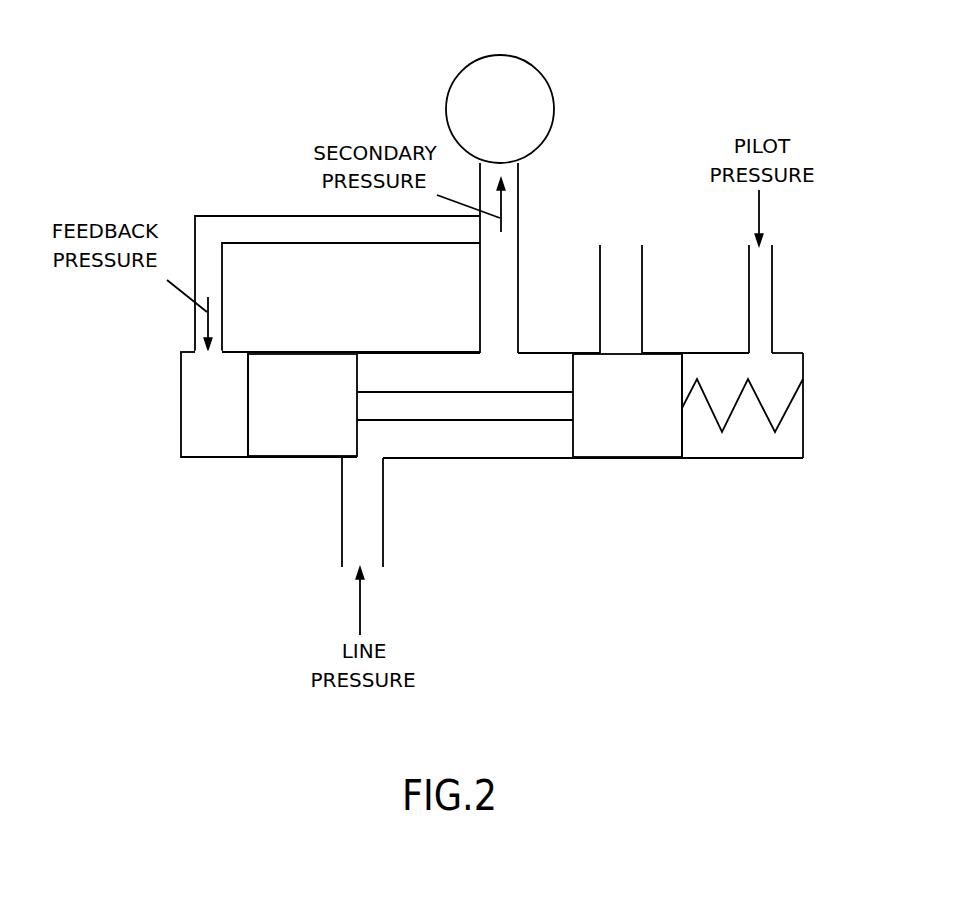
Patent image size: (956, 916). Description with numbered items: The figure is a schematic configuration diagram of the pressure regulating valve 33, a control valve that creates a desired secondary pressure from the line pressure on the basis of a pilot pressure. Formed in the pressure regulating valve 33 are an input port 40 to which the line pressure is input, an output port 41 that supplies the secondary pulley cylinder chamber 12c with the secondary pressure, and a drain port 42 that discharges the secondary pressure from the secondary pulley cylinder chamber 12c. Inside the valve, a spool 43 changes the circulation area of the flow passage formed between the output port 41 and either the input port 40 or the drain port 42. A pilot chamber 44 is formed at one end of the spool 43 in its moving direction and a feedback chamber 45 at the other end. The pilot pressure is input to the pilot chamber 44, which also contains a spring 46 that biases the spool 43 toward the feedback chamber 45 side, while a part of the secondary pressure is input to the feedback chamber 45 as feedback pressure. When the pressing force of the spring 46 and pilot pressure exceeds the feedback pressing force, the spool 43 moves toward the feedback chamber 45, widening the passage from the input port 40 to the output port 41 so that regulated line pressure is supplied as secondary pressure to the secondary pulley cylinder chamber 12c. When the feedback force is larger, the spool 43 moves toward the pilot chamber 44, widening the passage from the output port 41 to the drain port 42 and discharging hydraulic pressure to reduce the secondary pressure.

The secondary pulley cylinder chamber 12c is at (522, 74).
The pressure regulating valve 33 is at (639, 535).
The input port 40 is at (375, 507).
The output port 41 is at (502, 303).
The drain port 42 is at (632, 330).
The spool 43 is at (518, 433).
The pilot chamber 44 is at (767, 452).
The feedback chamber 45 is at (197, 452).
The spring 46 is at (715, 425).